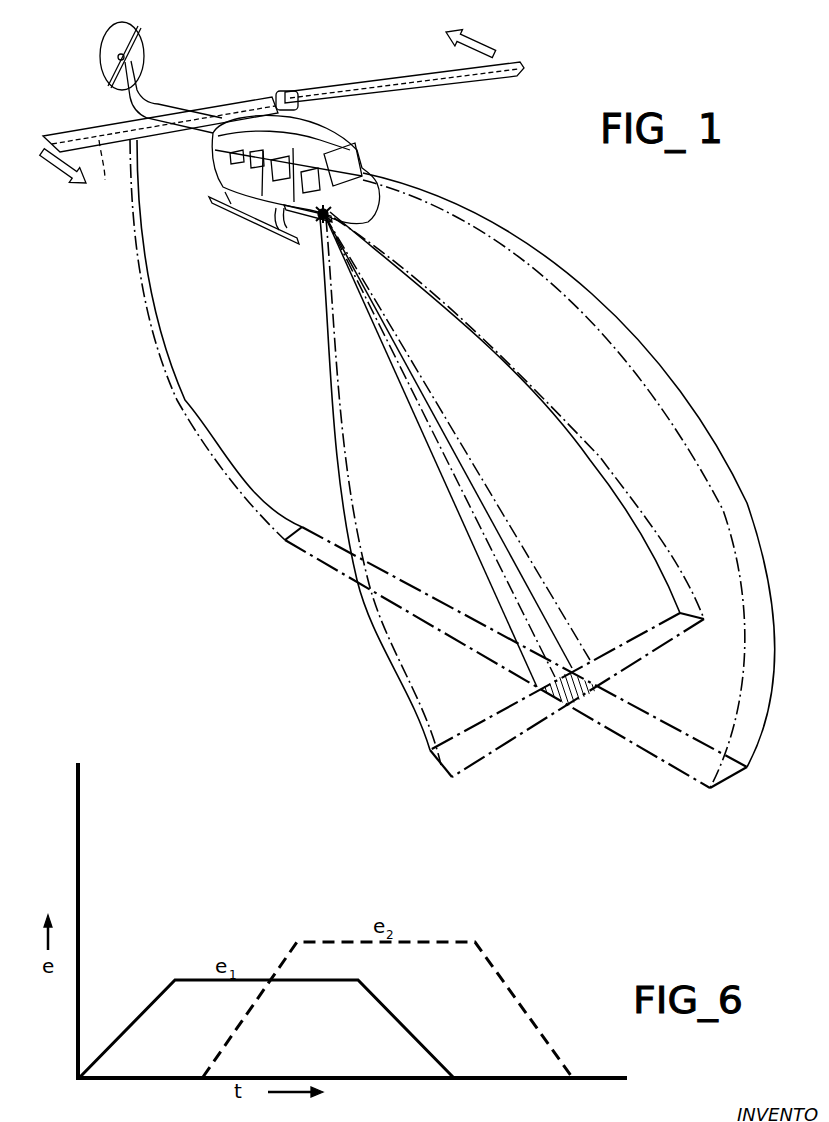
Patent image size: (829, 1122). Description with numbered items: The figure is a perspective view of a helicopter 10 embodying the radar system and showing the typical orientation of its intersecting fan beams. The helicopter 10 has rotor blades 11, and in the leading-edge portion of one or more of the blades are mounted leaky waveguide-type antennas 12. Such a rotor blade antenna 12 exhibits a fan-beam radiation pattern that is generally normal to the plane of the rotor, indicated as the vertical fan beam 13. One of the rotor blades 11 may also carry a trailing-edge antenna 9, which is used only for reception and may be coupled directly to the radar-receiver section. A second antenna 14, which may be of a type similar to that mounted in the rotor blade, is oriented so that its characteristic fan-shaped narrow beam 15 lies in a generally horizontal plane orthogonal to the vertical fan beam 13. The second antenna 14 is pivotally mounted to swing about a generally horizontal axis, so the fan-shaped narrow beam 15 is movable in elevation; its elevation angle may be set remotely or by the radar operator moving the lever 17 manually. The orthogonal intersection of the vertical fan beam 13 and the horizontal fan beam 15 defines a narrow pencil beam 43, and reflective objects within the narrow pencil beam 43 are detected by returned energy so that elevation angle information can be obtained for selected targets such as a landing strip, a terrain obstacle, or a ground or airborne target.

The trailing-edge antenna 9 is at (427, 87).
The helicopter 10 is at (184, 108).
The rotor blades 11 is at (104, 126).
The leaky waveguide-type antenna 12 is at (103, 172).
The vertical fan beam 13 is at (540, 247).
The second antenna 14 is at (321, 218).
The fan-shaped narrow beam 15 is at (327, 414).
The lever 17 is at (277, 221).
The narrow pencil beam 43 is at (471, 469).